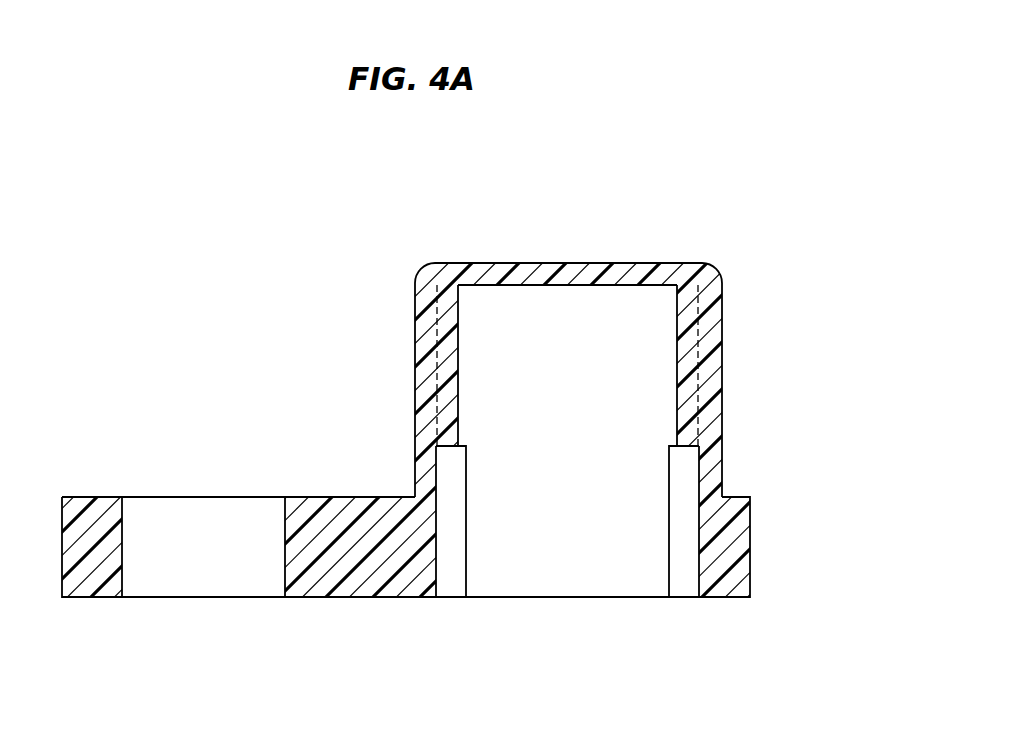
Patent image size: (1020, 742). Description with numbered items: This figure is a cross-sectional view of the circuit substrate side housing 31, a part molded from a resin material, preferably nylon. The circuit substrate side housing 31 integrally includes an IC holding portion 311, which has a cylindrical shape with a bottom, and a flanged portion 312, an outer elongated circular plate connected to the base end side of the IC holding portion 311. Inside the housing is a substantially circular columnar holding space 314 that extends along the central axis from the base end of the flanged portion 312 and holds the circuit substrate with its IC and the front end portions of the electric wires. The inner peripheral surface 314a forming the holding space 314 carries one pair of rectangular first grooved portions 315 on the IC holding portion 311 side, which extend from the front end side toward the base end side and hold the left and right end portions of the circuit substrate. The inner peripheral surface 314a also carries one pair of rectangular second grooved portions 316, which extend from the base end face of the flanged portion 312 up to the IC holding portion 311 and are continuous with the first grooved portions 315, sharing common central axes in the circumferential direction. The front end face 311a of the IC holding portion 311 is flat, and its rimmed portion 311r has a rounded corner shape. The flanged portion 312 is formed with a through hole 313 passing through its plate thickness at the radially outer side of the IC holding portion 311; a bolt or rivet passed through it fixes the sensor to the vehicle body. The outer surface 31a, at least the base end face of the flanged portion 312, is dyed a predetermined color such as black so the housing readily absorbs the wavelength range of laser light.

The circuit substrate side housing 31 is at (717, 177).
The IC holding portion 311 is at (721, 408).
The front end face 311a is at (545, 270).
The rimmed portion 311r is at (702, 292).
The flanged portion 312 is at (751, 529).
The through hole 313 is at (217, 520).
The holding space 314 is at (560, 537).
The inner peripheral surface 314a is at (637, 598).
The first grooved portion 315 is at (460, 358).
The second grooved portion 316 is at (447, 568).
The outer surface 31a is at (733, 598).